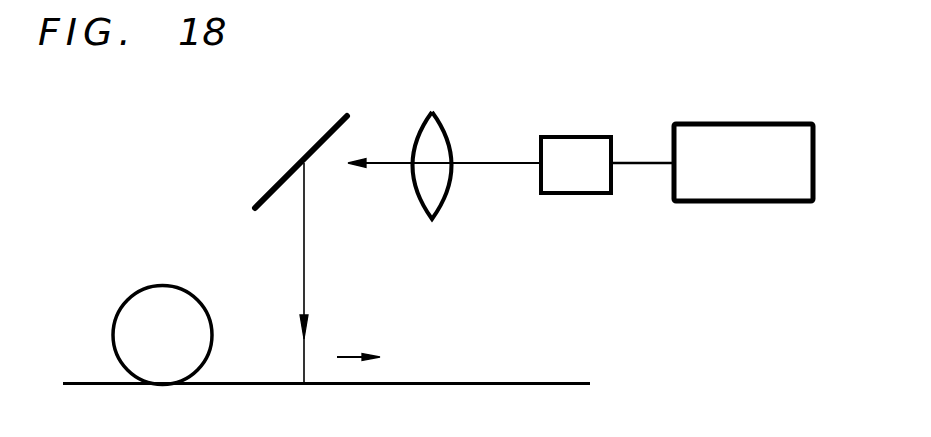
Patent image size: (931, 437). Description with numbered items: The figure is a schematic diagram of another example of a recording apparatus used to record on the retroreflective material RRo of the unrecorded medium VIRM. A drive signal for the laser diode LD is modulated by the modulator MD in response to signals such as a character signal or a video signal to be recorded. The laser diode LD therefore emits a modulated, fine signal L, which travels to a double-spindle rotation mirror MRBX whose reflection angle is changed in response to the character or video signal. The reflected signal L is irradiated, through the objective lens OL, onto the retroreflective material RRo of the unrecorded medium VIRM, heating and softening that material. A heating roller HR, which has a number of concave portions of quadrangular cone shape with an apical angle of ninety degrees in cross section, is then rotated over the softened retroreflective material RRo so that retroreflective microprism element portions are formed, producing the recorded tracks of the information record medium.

The double-spindle rotation mirror MRBX is at (272, 187).
The modulated fine signal L is at (500, 163).
The objective lens OL is at (417, 193).
The laser diode LD is at (572, 193).
The modulator MD is at (728, 123).
The heating roller HR is at (162, 287).
The retroreflective material RRo is at (452, 383).
The unrecorded medium VIRM is at (630, 340).